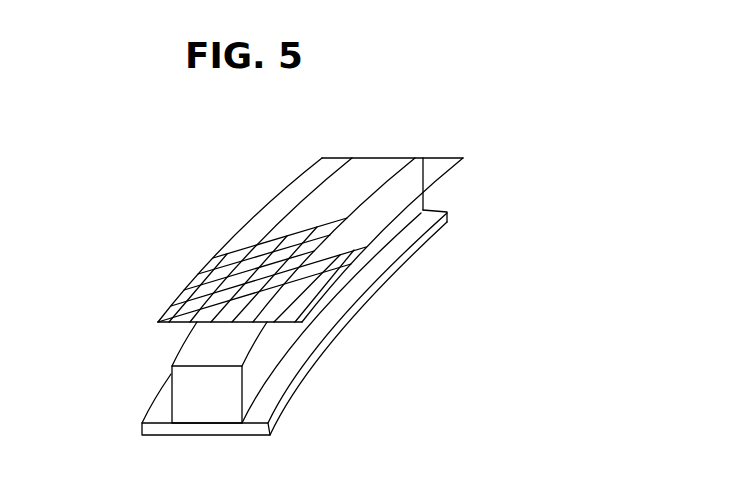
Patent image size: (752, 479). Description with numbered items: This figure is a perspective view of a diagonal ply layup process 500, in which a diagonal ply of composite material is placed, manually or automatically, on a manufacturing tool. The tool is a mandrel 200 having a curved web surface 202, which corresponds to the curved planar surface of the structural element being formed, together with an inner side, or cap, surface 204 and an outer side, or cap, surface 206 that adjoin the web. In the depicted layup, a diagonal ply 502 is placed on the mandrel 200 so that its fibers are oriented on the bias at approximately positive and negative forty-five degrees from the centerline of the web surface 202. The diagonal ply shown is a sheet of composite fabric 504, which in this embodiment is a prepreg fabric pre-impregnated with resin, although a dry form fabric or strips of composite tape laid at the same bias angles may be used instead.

The diagonal ply layup process 500 is at (503, 265).
The mandrel 200 is at (452, 212).
The web surface 202 is at (185, 350).
The inner side surface 204 is at (265, 368).
The outer side surface 206 is at (165, 400).
The diagonal ply 502 is at (230, 250).
The composite fabric 504 is at (315, 166).